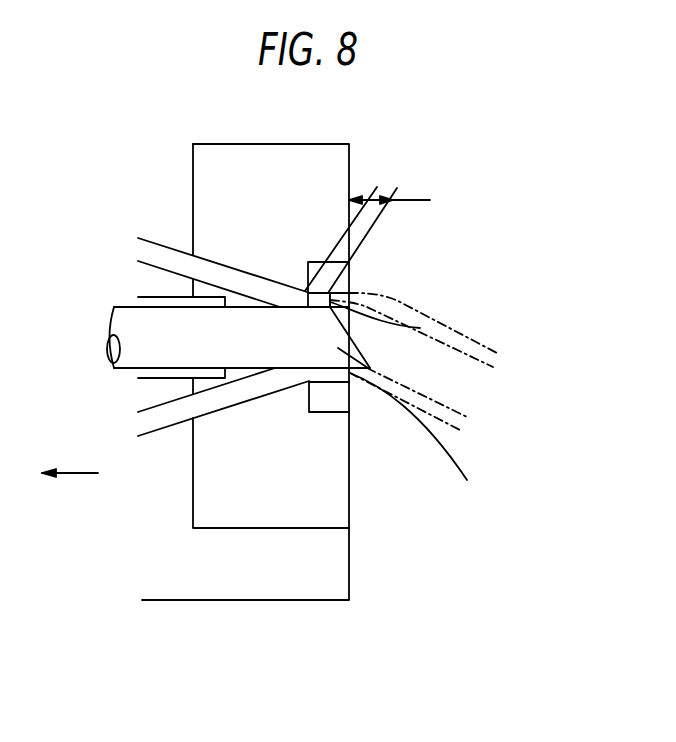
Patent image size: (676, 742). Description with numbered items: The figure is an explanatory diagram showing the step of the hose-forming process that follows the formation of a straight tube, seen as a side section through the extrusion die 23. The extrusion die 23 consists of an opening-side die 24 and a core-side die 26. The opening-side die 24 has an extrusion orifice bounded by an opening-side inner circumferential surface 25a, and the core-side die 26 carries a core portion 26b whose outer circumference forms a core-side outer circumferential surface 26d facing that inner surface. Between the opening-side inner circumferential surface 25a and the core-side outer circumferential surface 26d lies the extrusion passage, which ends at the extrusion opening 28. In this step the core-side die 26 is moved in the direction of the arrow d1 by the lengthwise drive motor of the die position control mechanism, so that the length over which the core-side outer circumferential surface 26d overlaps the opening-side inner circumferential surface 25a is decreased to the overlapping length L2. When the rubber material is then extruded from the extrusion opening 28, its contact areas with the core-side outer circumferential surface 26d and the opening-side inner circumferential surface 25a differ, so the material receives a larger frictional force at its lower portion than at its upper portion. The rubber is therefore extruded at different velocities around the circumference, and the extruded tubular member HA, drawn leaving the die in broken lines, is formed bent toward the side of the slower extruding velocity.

The extrusion die 23 is at (348, 677).
The opening-side die 24 is at (320, 529).
The opening-side inner circumferential surface 25a is at (397, 302).
The core-side die 26 is at (297, 368).
The core portion 26b is at (423, 444).
The core-side outer circumferential surface 26d is at (417, 327).
The extrusion opening 28 is at (357, 377).
The extruded tubular member HA is at (478, 342).
The overlapping length L2 is at (390, 188).
The direction d1 is at (72, 473).